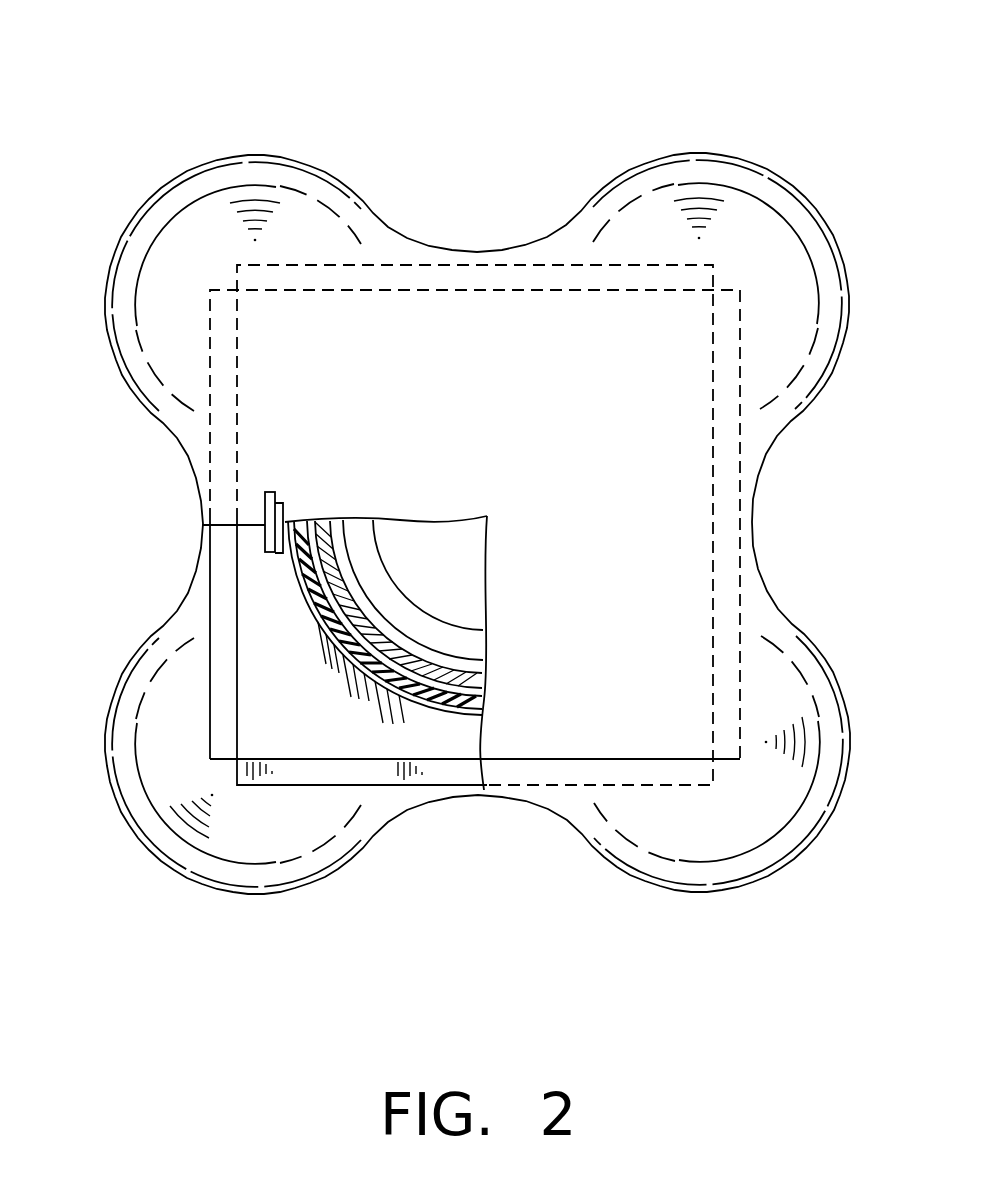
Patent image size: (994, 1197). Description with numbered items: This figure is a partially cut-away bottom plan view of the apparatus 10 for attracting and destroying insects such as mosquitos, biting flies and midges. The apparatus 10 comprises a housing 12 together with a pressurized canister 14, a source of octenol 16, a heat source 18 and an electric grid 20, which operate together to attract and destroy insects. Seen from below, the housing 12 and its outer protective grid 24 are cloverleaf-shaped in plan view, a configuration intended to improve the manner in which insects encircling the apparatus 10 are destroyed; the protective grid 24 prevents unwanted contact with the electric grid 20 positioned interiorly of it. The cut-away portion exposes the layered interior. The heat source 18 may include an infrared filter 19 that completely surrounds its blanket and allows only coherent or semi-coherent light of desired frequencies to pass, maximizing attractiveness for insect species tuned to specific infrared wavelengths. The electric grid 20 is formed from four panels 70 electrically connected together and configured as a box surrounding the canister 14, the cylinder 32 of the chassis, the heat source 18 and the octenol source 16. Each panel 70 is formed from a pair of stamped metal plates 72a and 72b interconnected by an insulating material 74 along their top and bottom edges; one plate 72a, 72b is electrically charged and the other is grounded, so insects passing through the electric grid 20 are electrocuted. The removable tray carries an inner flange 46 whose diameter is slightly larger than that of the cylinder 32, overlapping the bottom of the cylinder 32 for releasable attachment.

The apparatus 10 is at (545, 100).
The housing 12 is at (306, 142).
The protective grid 24 is at (566, 832).
The source of octenol 16 is at (262, 528).
The pressurized canister 14 is at (420, 565).
The heat source 18 is at (302, 647).
The infrared filter 19 is at (345, 662).
The panel 70 is at (184, 685).
The electric grid 20 is at (184, 764).
The metal plate 72a is at (258, 787).
The metal plate 72b is at (291, 787).
The insulating material 74 is at (377, 773).
The cylinder 32 is at (422, 690).
The inner flange 46 is at (448, 693).